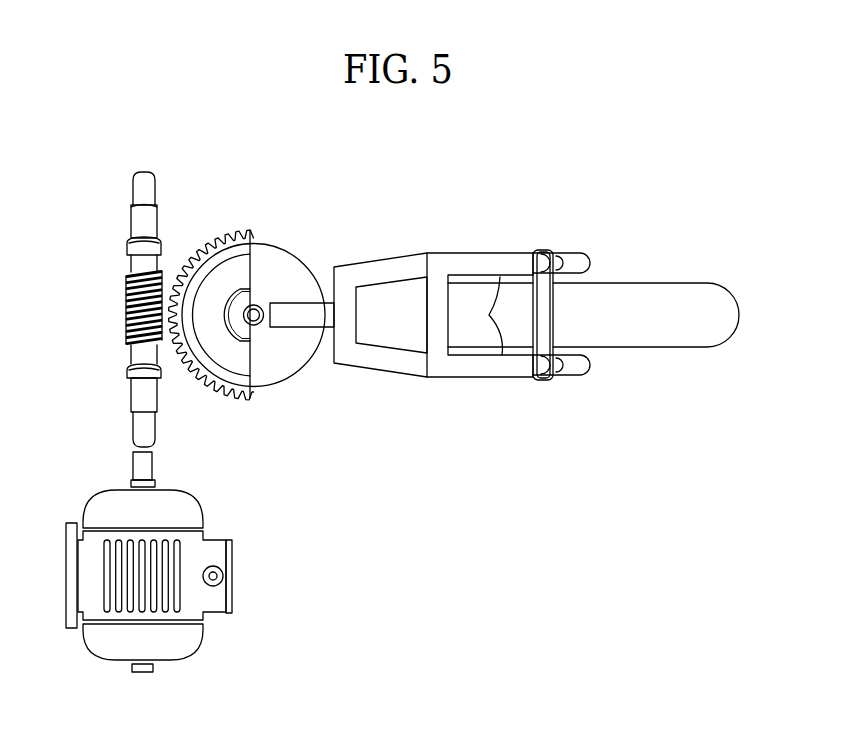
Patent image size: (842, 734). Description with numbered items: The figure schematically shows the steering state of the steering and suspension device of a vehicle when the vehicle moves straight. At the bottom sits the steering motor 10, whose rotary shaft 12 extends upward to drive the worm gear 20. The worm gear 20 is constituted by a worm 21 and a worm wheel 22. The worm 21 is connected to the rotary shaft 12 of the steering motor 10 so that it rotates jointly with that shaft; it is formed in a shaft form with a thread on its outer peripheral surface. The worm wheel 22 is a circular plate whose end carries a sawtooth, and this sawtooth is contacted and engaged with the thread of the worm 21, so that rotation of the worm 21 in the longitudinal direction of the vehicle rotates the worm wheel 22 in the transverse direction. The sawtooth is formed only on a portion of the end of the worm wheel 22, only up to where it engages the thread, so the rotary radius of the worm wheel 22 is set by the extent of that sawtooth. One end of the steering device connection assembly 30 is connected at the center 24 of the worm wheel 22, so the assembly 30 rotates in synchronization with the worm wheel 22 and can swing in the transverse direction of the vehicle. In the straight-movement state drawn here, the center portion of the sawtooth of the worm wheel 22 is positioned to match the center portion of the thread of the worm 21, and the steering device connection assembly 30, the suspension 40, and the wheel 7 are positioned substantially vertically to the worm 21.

The wheel 7 is at (667, 283).
The steering motor 10 is at (232, 578).
The motor shaft 12 is at (131, 393).
The worm gear 20 is at (231, 189).
The worm 21 is at (126, 303).
The worm wheel 22 is at (216, 388).
The rotation shaft 24 is at (258, 305).
The steering device connection assembly 30 is at (436, 255).
The suspension 40 is at (523, 308).